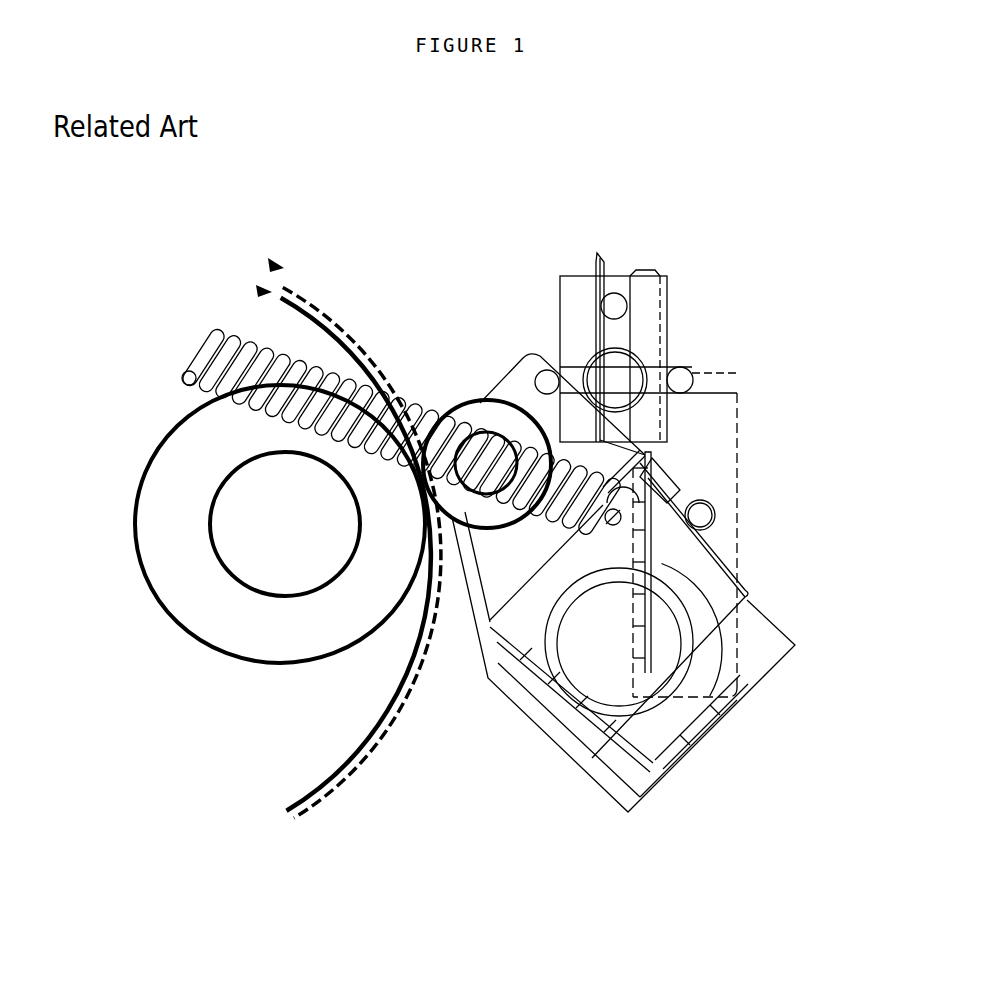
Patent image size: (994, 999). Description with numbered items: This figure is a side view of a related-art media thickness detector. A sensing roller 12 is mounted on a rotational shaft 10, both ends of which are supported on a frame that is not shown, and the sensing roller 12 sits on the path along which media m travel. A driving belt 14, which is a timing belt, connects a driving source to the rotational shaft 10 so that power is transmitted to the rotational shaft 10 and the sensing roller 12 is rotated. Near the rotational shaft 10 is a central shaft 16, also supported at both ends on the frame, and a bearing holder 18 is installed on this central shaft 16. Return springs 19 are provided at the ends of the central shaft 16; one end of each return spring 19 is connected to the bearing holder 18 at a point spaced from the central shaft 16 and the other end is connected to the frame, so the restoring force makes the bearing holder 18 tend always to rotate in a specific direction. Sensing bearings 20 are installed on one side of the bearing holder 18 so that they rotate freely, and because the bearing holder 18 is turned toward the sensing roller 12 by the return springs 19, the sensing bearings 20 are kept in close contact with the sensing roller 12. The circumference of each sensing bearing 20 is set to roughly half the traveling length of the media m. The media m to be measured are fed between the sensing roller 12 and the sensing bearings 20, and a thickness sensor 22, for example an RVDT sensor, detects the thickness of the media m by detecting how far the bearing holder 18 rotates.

The rotational shaft 10 is at (240, 562).
The sensing roller 12 is at (163, 467).
The driving belt 14 is at (270, 265).
The media m is at (258, 290).
The central shaft 16 is at (653, 758).
The bearing holder 18 is at (768, 617).
The return spring 19 is at (200, 352).
The sensing bearing 20 is at (493, 413).
The thickness sensor 22 is at (668, 302).